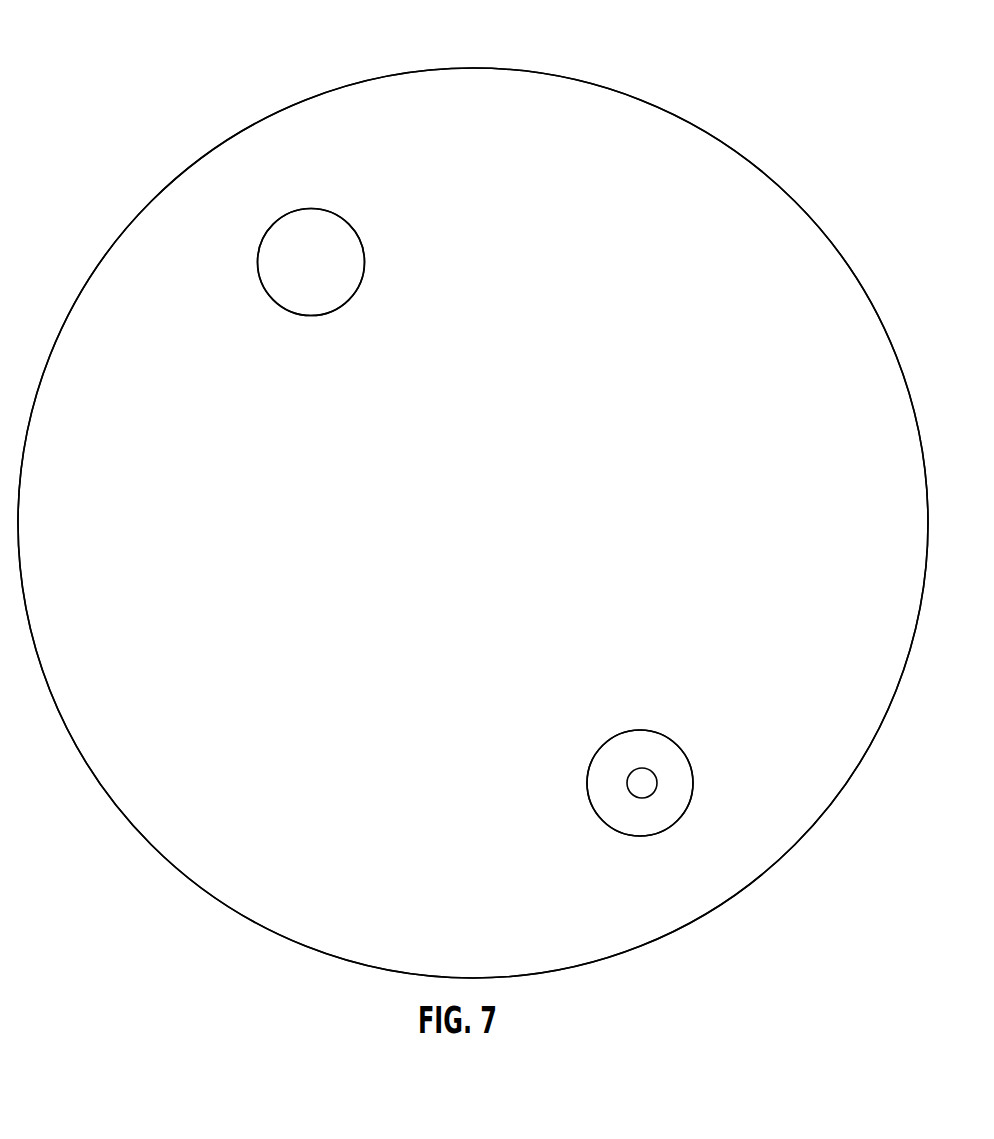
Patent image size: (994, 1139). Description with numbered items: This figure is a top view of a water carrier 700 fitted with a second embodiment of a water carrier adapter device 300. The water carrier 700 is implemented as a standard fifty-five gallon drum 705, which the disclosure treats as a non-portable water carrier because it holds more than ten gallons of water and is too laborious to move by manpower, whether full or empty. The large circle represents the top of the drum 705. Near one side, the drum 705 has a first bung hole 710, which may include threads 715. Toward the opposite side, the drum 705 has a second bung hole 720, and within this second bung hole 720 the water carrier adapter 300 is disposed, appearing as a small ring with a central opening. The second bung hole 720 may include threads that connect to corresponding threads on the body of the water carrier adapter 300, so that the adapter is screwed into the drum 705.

The water carrier 700 is at (170, 39).
The drum 705 is at (372, 73).
The first bung hole 710 is at (298, 208).
The threads 715 is at (280, 258).
The water carrier adapter device 300 is at (670, 798).
The second bung hole 720 is at (638, 837).